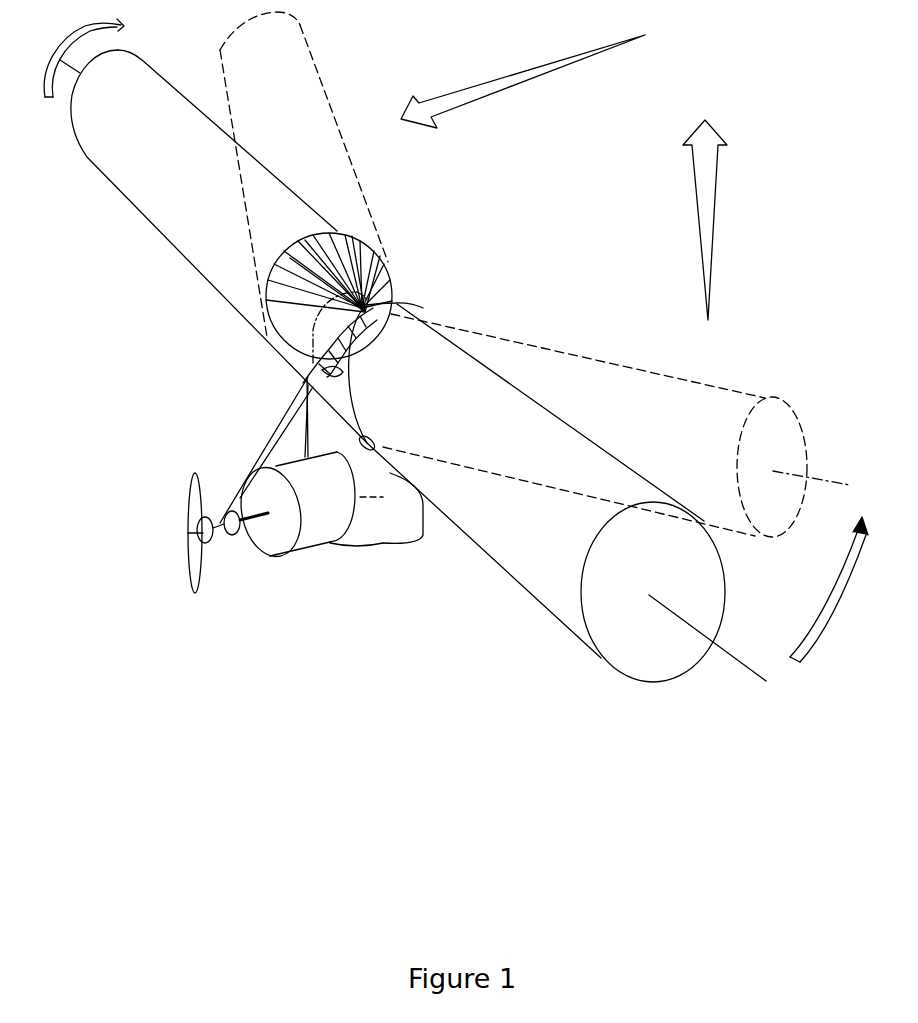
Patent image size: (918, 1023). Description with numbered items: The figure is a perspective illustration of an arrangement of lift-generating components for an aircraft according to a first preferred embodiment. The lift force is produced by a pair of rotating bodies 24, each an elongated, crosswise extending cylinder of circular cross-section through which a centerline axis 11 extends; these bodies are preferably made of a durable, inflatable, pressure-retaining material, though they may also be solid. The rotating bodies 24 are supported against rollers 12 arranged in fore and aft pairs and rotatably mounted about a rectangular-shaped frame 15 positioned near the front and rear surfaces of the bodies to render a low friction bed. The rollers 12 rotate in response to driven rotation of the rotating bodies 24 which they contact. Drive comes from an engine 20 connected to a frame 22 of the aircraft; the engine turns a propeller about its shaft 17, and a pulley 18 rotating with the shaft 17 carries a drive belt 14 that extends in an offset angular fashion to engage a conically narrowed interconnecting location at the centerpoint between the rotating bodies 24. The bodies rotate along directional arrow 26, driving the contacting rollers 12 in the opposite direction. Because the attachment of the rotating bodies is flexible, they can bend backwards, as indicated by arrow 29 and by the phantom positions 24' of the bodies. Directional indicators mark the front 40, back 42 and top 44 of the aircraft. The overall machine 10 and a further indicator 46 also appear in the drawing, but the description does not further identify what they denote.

The machine 10 is at (292, 366).
The drum end support 11 is at (718, 636).
The support strut 12 is at (296, 370).
The support arm 14 is at (305, 457).
The pivot bearing 15 is at (310, 378).
The propeller 17 is at (205, 543).
The drive shaft hub 18 is at (232, 535).
The motor 20 is at (367, 552).
The motor mount 22 is at (383, 463).
The drum 24 is at (401, 366).
The drum in alternate position 24' is at (535, 274).
The direction of rotation 26 is at (37, 82).
The direction of rotation 29 is at (808, 655).
The direction arrow 40 is at (372, 127).
The direction arrow 42 is at (542, 69).
The direction of movement 44 is at (705, 201).
The direction arrow 46 is at (707, 276).